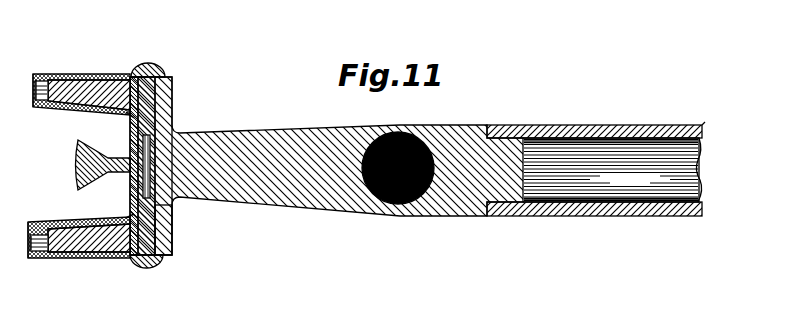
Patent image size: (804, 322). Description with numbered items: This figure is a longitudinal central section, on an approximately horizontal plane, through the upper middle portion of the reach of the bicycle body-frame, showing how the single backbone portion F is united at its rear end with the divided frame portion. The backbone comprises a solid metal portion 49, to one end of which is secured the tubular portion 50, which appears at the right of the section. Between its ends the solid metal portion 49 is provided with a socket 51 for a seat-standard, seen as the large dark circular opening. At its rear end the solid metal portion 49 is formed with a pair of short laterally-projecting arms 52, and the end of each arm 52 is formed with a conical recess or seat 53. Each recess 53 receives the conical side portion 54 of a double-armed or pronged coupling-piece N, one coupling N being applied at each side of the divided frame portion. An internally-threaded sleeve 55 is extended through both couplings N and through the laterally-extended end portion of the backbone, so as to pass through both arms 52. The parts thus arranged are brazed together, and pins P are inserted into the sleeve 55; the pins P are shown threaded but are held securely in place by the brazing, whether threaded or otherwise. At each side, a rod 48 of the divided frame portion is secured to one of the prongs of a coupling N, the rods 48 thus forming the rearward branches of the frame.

The rod 48 is at (29, 152).
The solid metal portion 49 is at (303, 197).
The tubular portion 50 is at (585, 207).
The socket 51 is at (415, 136).
The laterally-projecting arm 52 is at (157, 127).
The conical recess 53 is at (135, 118).
The conical side portion 54 is at (90, 75).
The internally-threaded sleeve 55 is at (168, 240).
The pin P is at (140, 71).
The double-armed coupling-piece N is at (43, 187).
The backbone portion F is at (596, 146).